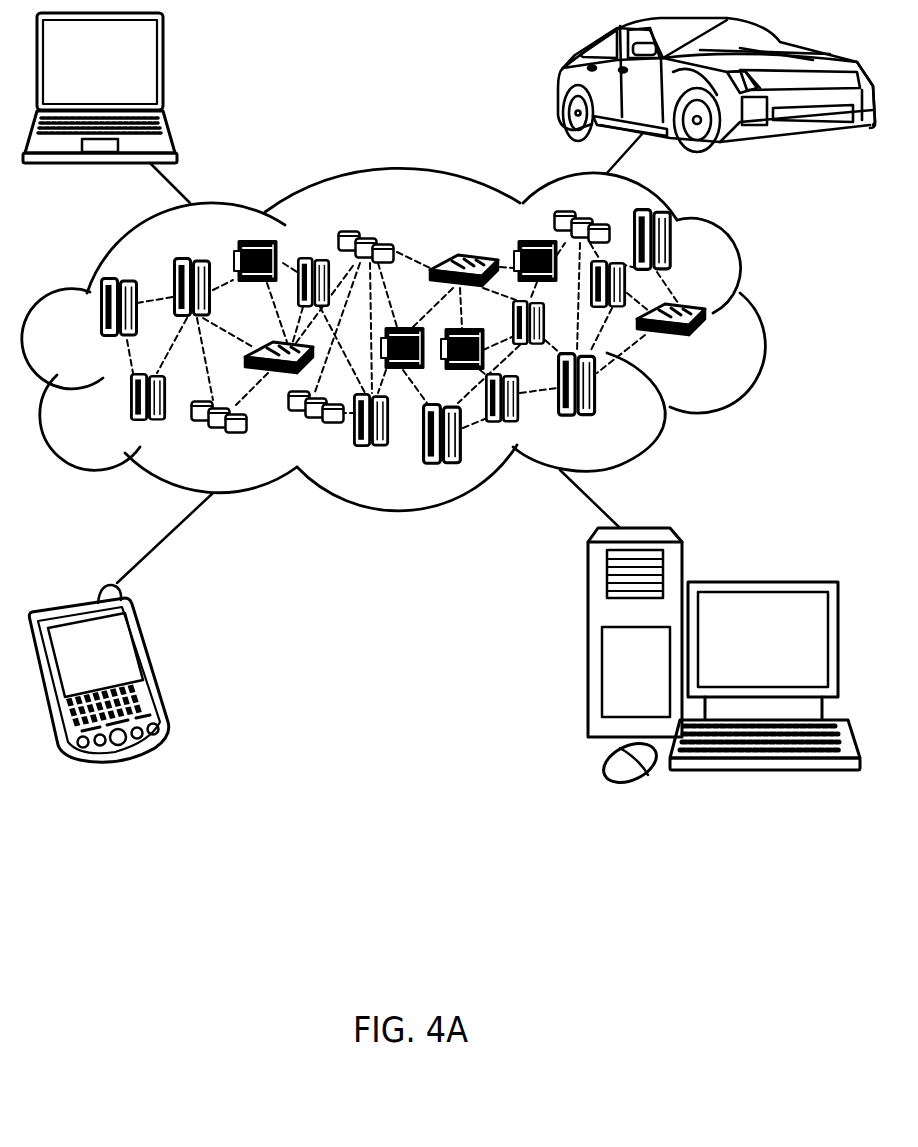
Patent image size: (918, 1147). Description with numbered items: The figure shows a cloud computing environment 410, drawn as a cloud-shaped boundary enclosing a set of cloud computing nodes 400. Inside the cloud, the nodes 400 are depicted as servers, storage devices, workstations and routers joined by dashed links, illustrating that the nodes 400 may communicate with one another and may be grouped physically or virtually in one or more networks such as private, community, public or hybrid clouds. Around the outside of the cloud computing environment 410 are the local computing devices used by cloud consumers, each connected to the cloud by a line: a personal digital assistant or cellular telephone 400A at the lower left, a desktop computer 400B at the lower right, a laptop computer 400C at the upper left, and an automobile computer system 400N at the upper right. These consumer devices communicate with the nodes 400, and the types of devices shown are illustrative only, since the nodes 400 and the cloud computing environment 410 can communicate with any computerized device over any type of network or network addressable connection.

The cloud computing nodes 400 is at (716, 349).
The cloud computing environment 410 is at (760, 318).
The personal digital assistant (PDA) or cellular telephone 400A is at (151, 667).
The desktop computer 400B is at (760, 582).
The laptop computer 400C is at (163, 72).
The automobile computer system 400N is at (560, 84).